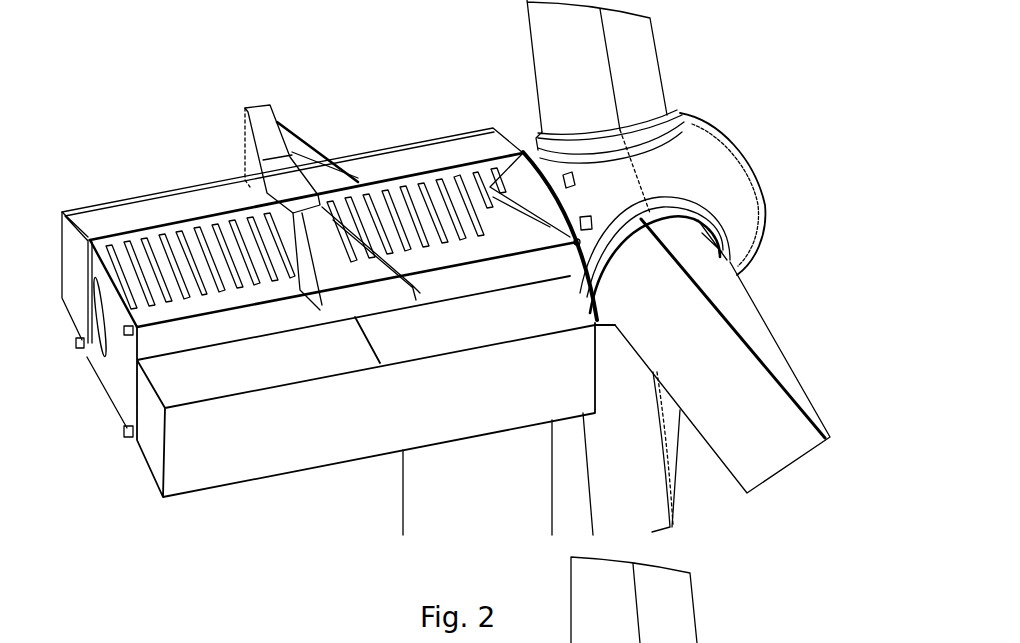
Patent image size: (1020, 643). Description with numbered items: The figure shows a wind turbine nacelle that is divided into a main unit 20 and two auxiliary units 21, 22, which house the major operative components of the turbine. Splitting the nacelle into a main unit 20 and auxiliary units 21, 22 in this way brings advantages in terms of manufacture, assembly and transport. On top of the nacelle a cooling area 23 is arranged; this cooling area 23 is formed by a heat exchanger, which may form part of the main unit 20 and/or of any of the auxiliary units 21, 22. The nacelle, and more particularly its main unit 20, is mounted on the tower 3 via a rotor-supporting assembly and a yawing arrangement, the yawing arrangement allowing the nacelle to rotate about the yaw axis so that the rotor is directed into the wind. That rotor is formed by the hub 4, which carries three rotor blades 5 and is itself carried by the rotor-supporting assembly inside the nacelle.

The tower 3 is at (402, 477).
The hub 4 is at (748, 217).
The rotor blades 5 is at (653, 75).
The main unit 20 is at (108, 353).
The auxiliary unit 21 is at (118, 215).
The auxiliary unit 22 is at (195, 447).
The cooling area 23 is at (243, 127).